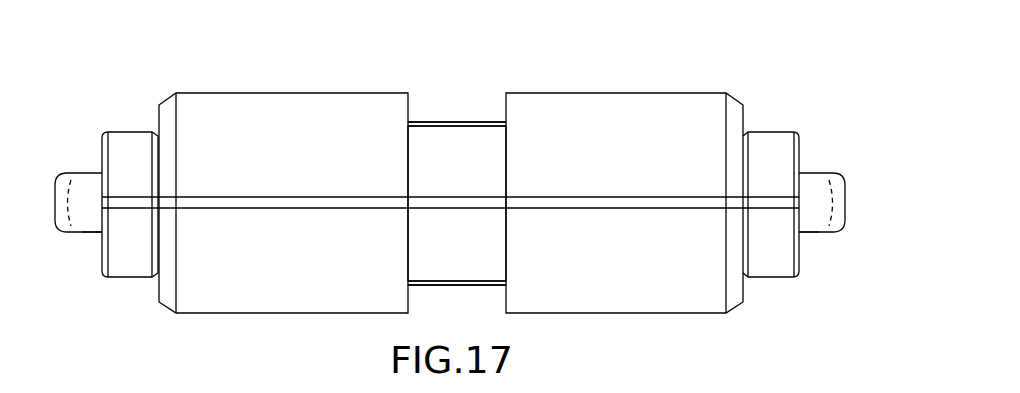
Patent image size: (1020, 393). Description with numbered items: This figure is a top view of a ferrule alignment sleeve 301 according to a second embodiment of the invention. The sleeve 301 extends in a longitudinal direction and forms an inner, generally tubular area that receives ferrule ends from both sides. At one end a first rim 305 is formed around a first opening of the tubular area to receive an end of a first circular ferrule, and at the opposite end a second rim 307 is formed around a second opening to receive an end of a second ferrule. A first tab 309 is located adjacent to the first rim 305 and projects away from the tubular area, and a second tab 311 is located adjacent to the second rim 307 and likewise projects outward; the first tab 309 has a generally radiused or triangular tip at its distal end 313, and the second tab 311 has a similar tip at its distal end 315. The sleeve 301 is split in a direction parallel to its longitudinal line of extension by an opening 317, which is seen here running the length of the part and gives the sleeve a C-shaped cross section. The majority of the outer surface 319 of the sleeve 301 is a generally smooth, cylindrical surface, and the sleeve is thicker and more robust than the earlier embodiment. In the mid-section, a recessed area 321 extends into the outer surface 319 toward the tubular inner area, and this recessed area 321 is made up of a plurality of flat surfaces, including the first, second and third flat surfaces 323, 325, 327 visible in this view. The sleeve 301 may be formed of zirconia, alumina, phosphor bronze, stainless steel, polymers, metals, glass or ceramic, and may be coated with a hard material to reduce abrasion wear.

The ferrule alignment sleeve 301 is at (563, 75).
The first rim 305 is at (103, 152).
The second rim 307 is at (800, 147).
The first tab 309 is at (82, 225).
The second tab 311 is at (817, 220).
The distal end of first tab 313 is at (55, 207).
The distal end of second tab 315 is at (845, 203).
The opening 317 is at (217, 205).
The outer surface 319 is at (302, 154).
The recessed area 321 is at (470, 83).
The first flat surface 323 is at (440, 285).
The second flat surface 325 is at (472, 172).
The third flat surface 327 is at (433, 122).